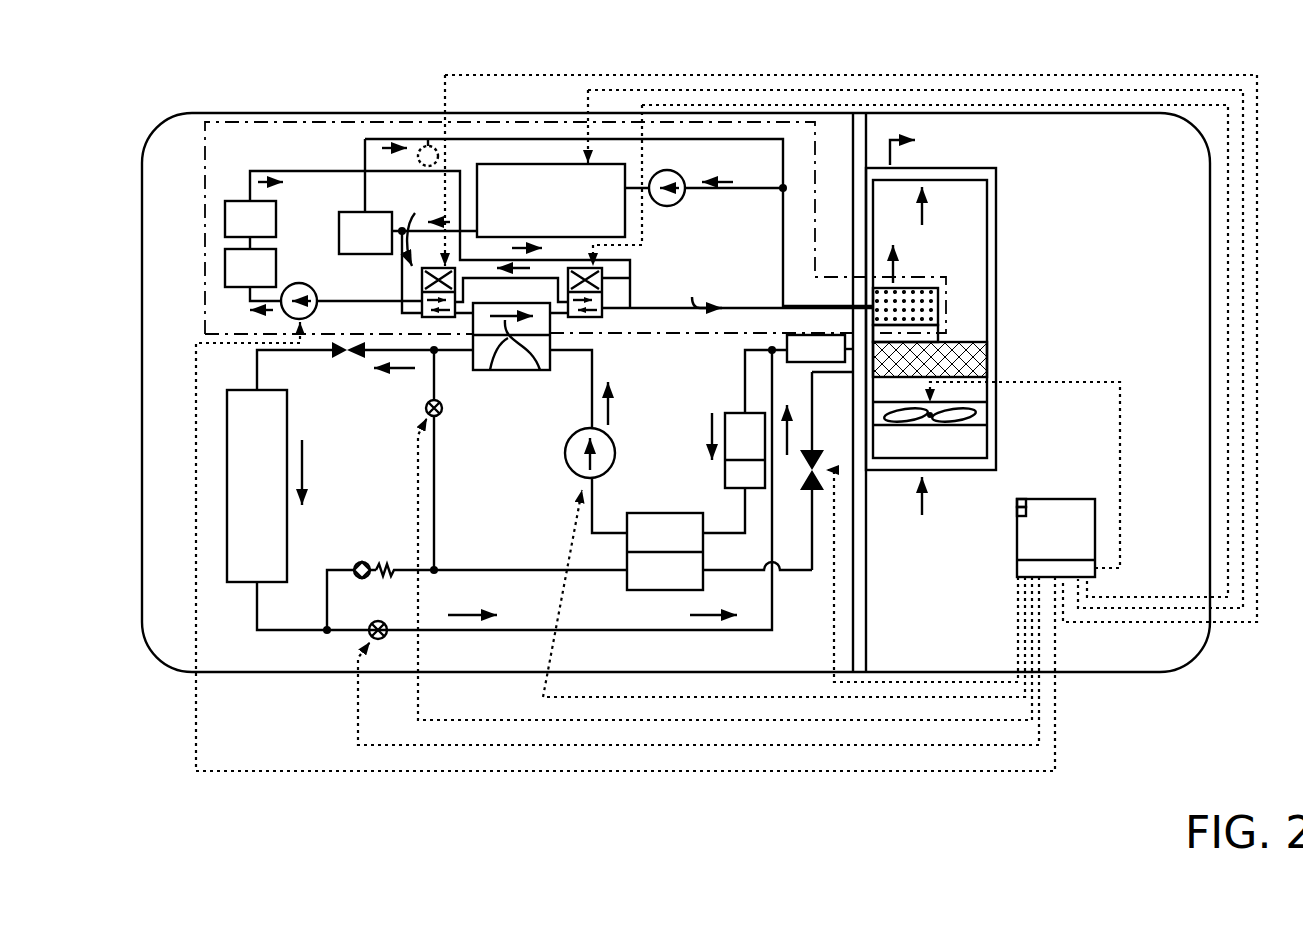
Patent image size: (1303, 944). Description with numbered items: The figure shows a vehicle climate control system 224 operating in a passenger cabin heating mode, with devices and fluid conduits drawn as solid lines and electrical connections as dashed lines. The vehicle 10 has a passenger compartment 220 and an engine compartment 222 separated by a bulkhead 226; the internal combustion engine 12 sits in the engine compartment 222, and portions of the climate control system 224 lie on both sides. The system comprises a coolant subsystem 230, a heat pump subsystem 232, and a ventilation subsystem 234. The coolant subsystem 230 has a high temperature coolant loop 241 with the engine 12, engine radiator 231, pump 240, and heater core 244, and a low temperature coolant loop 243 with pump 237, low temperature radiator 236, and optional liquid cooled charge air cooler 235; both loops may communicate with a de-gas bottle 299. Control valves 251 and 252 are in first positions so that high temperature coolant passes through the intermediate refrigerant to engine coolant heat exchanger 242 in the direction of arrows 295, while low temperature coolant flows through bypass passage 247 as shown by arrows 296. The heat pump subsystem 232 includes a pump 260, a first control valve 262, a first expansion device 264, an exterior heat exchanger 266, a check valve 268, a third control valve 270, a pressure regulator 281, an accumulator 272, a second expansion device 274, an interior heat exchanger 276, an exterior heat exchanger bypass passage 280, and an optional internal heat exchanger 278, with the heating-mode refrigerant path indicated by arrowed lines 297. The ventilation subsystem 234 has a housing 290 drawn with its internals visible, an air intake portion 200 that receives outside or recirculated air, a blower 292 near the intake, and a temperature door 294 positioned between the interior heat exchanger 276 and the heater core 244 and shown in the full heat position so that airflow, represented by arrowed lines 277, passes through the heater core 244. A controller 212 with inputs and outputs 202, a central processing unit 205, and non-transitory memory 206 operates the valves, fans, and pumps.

The vehicle 10 is at (158, 122).
The internal combustion engine 12 is at (860, 349).
The air intake portion 200 is at (930, 442).
The inputs and outputs 202 is at (1017, 568).
The central processing unit 205 is at (1017, 513).
The non-transitory memory 206 is at (1017, 504).
The controller 212 is at (1056, 538).
The passenger compartment 220 is at (1125, 400).
The engine compartment 222 is at (164, 400).
The vehicle climate control system 224 is at (180, 270).
The bulkhead 226 is at (868, 614).
The coolant subsystem 230 is at (203, 188).
The engine radiator 231 is at (408, 262).
The heat pump subsystem 232 is at (195, 342).
The ventilation subsystem 234 is at (1000, 188).
The liquid cooled charge air cooler 235 is at (253, 273).
The low temperature radiator 236 is at (250, 219).
The pump 237 is at (300, 283).
The pump 240 is at (678, 204).
The high temperature coolant loop 241 is at (360, 150).
The intermediate refrigerant to engine coolant heat exchanger 242 is at (490, 372).
The low temperature coolant loop 243 is at (298, 165).
The heater core 244 is at (932, 290).
The bypass passage 247 is at (520, 280).
The control valve 251 is at (420, 282).
The control valve 252 is at (612, 275).
The pump 260 is at (572, 466).
The first control valve 262 is at (420, 412).
The first expansion device 264 is at (338, 358).
The exterior heat exchanger 266 is at (499, 492).
The check valve 268 is at (385, 560).
The third control valve 270 is at (383, 620).
The accumulator 272 is at (756, 417).
The second expansion device 274 is at (828, 466).
The interior heat exchanger 276 is at (992, 358).
The arrowed lines 277 is at (922, 514).
The internal heat exchanger 278 is at (719, 539).
The exterior heat exchanger bypass passage 280 is at (436, 492).
The pressure regulator 281 is at (820, 348).
The housing 290 is at (998, 455).
The blower 292 is at (986, 418).
The temperature door 294 is at (950, 325).
The arrows 295 is at (722, 165).
The arrows 296 is at (283, 190).
The arrowed lines 297 is at (405, 370).
The de-gas bottle 299 is at (425, 166).